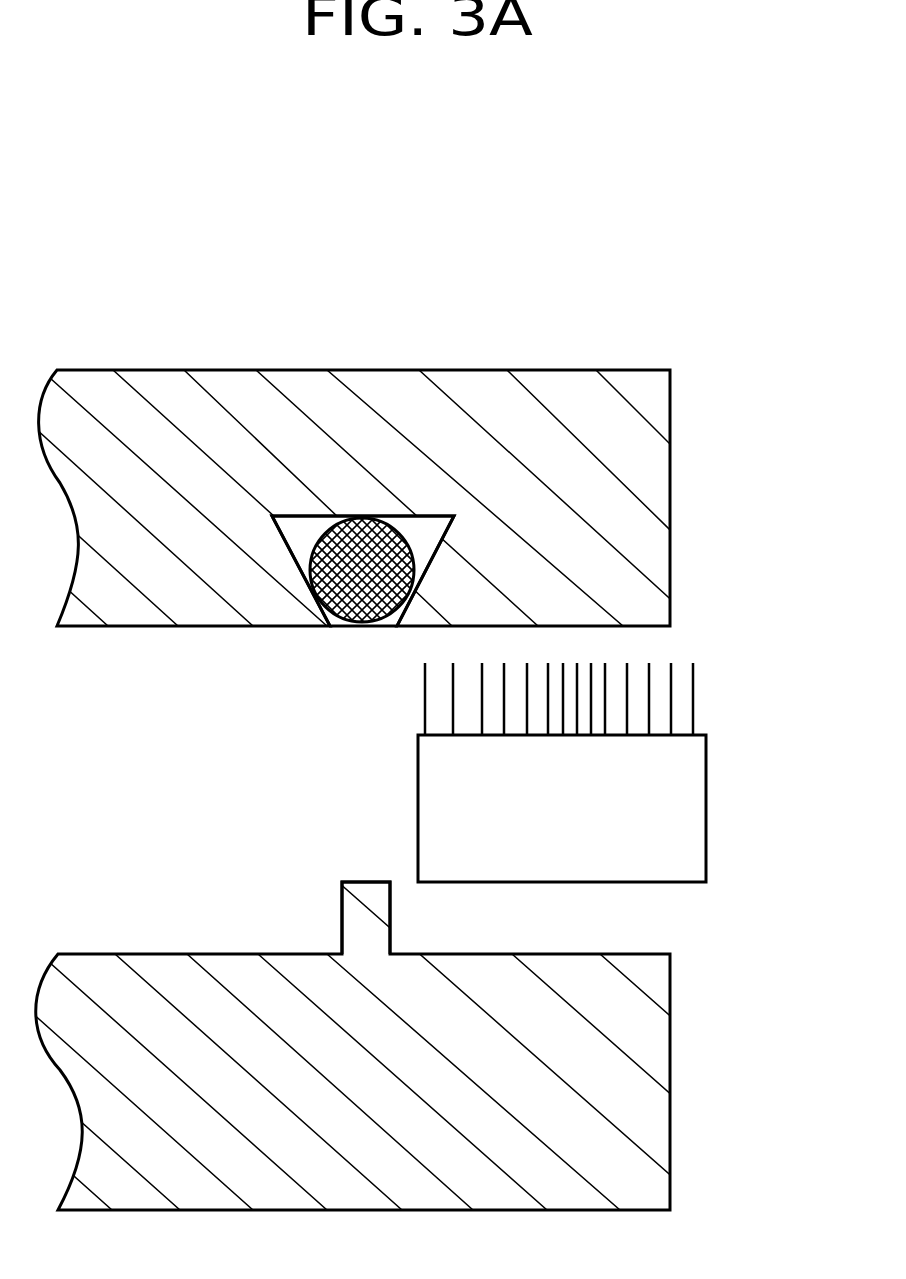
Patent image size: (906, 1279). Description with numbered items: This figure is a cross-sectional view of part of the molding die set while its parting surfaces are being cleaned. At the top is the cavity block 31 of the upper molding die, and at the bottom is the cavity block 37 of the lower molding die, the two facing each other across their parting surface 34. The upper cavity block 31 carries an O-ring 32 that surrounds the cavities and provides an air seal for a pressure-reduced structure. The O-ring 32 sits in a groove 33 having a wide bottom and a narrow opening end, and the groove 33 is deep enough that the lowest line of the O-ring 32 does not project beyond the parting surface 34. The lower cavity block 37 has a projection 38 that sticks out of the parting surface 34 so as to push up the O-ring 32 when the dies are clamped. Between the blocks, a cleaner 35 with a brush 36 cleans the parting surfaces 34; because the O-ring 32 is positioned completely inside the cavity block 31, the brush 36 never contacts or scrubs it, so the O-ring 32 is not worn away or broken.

The cavity block 31 is at (502, 380).
The O-ring 32 is at (383, 588).
The groove 33 is at (420, 533).
The parting surface 34 is at (198, 627).
The cleaner 35 is at (703, 807).
The brush 36 is at (693, 698).
The cavity block 37 is at (670, 1118).
The projection 38 is at (368, 887).